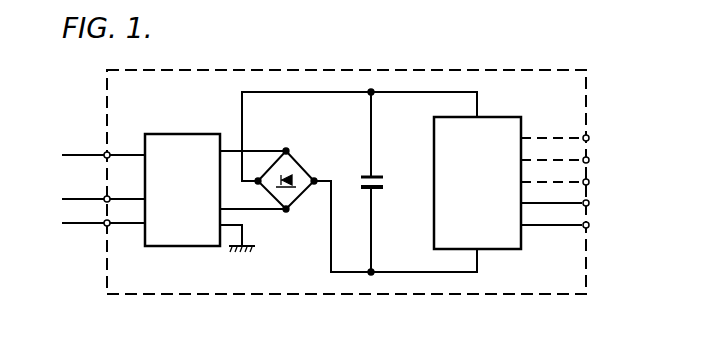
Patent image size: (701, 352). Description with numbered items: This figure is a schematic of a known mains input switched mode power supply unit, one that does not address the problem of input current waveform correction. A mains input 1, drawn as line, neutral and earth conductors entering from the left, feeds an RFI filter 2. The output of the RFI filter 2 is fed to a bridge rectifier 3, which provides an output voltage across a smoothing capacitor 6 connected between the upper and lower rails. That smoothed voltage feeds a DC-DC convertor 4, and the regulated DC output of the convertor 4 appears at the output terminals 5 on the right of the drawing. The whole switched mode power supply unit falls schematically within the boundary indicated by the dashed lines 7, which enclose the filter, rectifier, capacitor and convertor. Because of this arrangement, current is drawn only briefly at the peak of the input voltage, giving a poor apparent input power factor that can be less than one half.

The mains input 1 is at (60, 122).
The RFI filter 2 is at (180, 134).
The bridge rectifier 3 is at (295, 196).
The DC-DC convertor 4 is at (492, 128).
The regulated DC output terminals 5 is at (572, 194).
The smoothing capacitor 6 is at (360, 175).
The dashed lines 7 is at (556, 288).